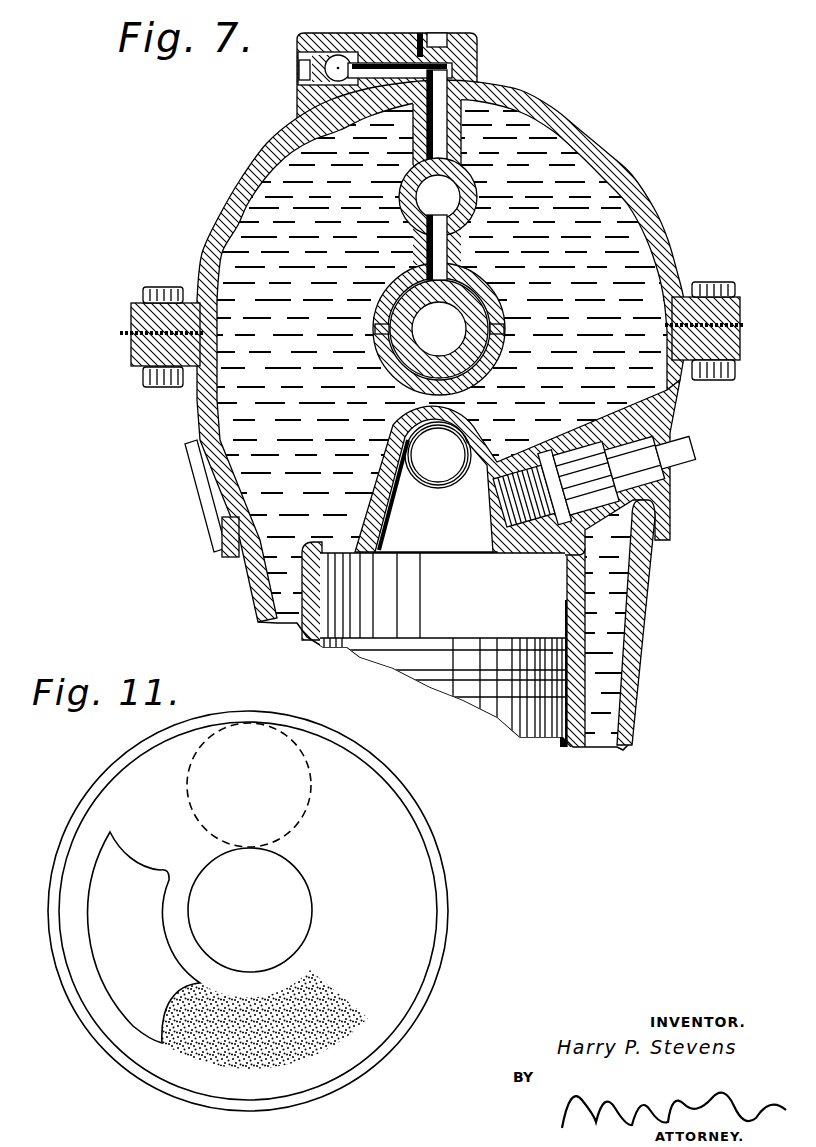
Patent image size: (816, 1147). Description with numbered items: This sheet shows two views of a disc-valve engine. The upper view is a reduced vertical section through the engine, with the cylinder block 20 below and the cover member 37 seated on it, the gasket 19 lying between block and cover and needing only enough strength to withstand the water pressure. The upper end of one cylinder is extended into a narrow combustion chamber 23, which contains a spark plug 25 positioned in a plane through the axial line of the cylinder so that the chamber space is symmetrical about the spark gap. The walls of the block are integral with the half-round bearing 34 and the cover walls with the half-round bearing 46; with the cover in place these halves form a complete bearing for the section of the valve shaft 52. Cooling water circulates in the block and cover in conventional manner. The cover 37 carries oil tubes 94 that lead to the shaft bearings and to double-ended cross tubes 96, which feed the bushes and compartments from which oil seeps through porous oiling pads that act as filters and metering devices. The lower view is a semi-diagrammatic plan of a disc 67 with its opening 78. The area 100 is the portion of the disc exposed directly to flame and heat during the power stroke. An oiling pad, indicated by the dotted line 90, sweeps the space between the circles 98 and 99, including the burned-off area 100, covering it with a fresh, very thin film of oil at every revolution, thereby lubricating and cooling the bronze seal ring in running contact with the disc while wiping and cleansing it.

In FIG. 7, the cover member 37 is at (585, 145).
In FIG. 7, the oil tubes 94 is at (438, 90).
In FIG. 7, the double-ended cross tubes 96 is at (453, 193).
In FIG. 7, the half-round bearing 46 is at (467, 283).
In FIG. 7, the half-round bearing 34 is at (483, 372).
In FIG. 7, the valve shaft section 52 is at (407, 357).
In FIG. 7, the gasket 19 is at (133, 333).
In FIG. 7, the spark plug 25 is at (493, 507).
In FIG. 7, the combustion chamber 23 is at (467, 542).
In FIG. 7, the cylinder block 20 is at (640, 628).
In FIG. 11, the disc 67 is at (430, 826).
In FIG. 11, the circle 99 is at (427, 848).
In FIG. 11, the oiling pad 90 is at (312, 777).
In FIG. 11, the circle 98 is at (313, 896).
In FIG. 11, the opening 78 is at (115, 982).
In FIG. 11, the burned-off area 100 is at (330, 1008).